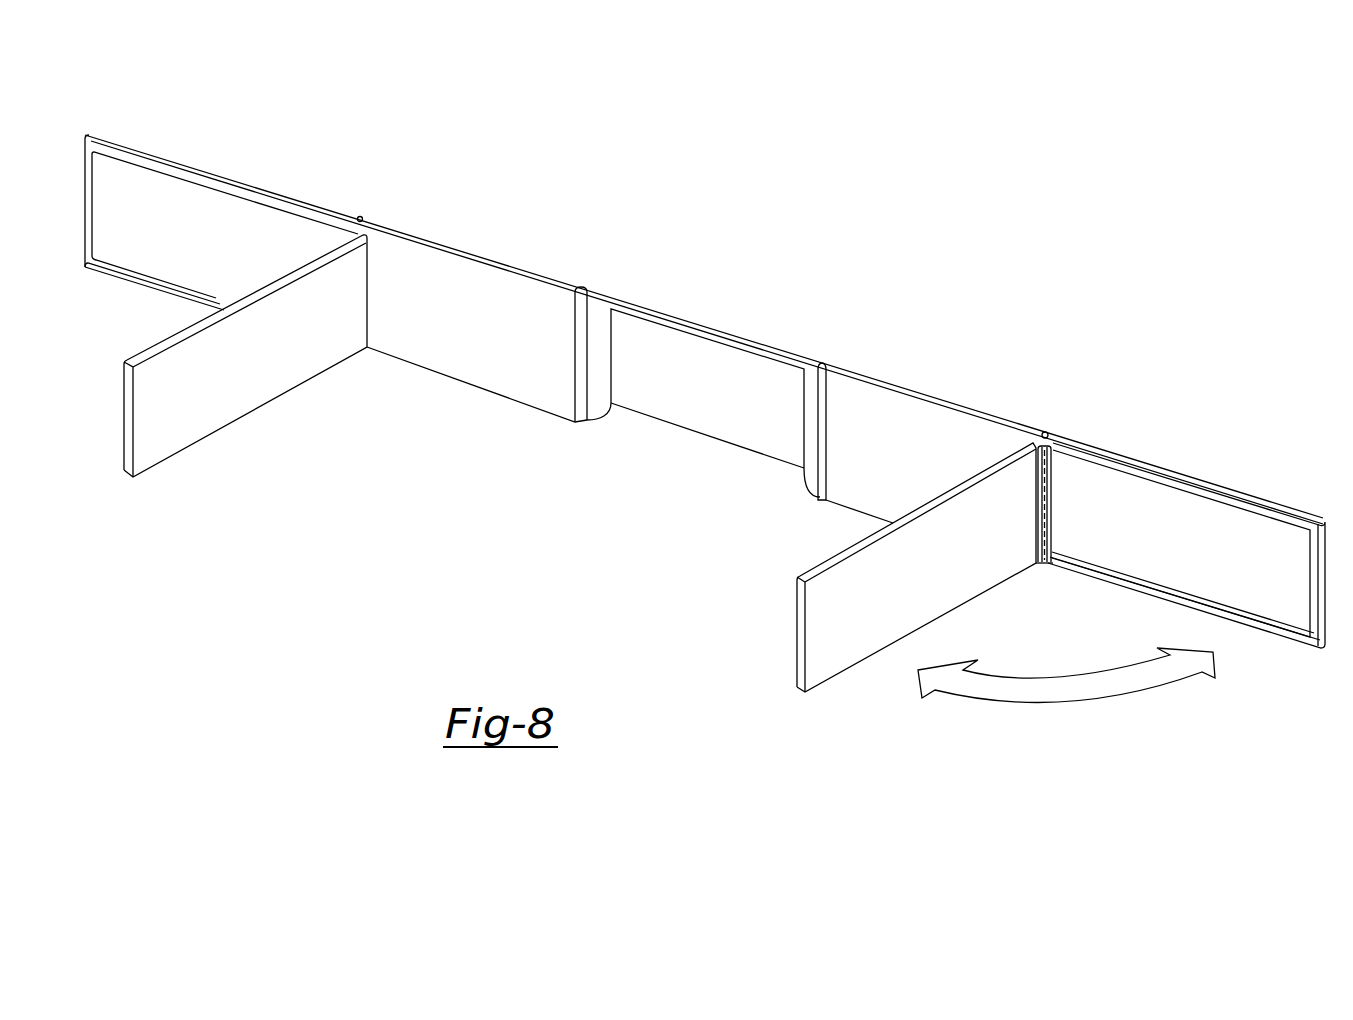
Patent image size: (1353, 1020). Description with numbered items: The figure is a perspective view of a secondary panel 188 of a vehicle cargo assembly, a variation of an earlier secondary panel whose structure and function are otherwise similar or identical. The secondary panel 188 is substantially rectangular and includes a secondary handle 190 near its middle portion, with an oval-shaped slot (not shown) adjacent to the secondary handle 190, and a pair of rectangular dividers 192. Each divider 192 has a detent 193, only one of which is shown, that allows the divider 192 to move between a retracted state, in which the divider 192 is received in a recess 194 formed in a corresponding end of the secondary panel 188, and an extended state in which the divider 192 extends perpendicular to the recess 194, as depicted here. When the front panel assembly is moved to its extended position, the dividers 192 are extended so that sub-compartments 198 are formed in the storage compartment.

The secondary panel 188 is at (716, 326).
The secondary handle 190 is at (706, 446).
The rectangular divider 192 is at (257, 375).
The detent 193 is at (1050, 480).
The recess 194 is at (252, 221).
The sub-compartment 198 is at (100, 338).